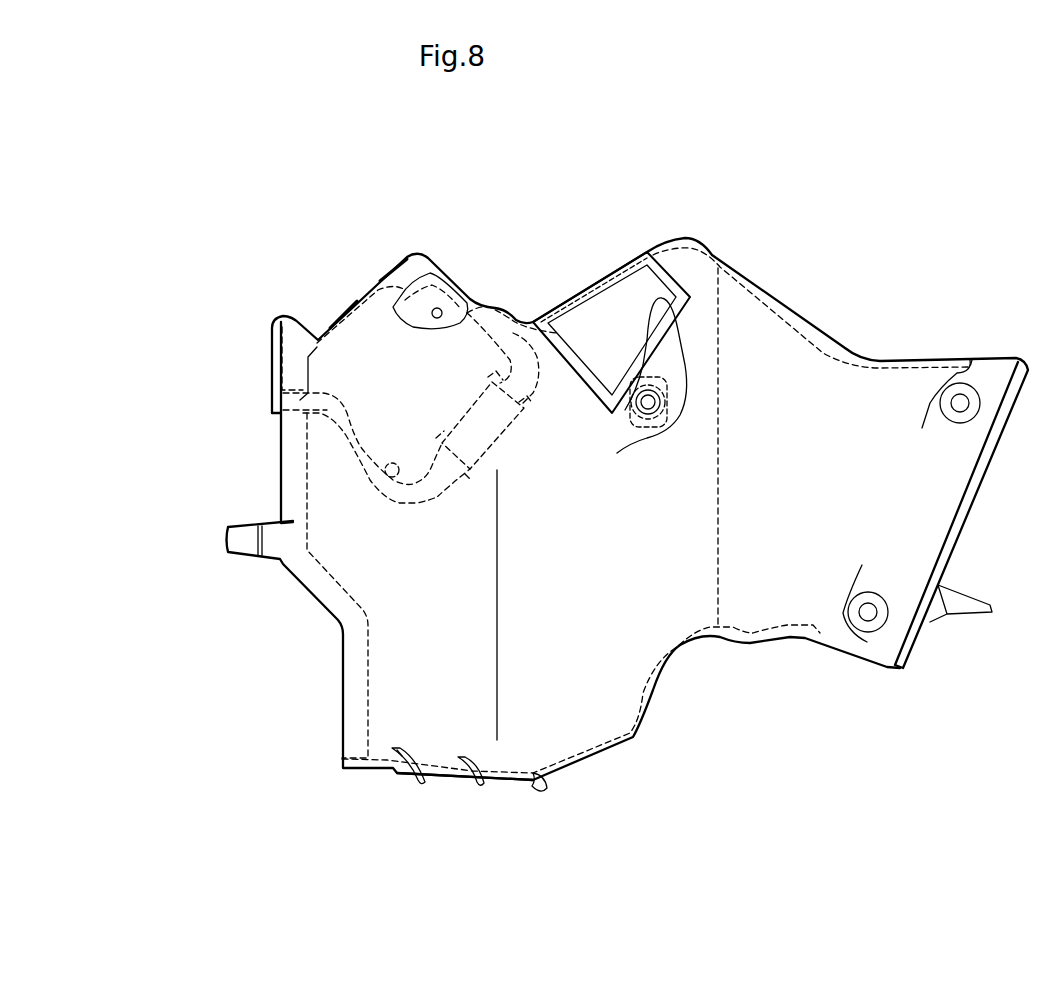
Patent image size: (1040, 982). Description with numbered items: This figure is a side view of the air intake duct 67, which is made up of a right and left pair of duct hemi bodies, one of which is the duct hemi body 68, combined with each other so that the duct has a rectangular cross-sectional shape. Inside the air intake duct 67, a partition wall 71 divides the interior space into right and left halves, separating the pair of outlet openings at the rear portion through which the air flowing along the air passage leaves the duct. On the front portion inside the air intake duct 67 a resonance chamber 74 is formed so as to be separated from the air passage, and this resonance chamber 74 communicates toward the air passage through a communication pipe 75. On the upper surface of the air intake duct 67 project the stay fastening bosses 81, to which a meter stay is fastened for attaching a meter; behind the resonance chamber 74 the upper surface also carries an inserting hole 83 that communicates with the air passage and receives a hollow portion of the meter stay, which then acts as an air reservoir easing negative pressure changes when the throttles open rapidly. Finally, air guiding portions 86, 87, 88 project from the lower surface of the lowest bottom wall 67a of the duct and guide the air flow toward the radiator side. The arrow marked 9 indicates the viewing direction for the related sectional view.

The air intake duct 67 is at (740, 255).
The lowest bottom wall 67a is at (507, 787).
The duct hemi body 68 is at (510, 317).
The partition wall 71 is at (717, 508).
The resonance chamber 74 is at (399, 490).
The communication pipe 75 is at (527, 410).
The stay fastening boss 81 is at (393, 262).
The inserting hole 83 is at (652, 297).
The air guiding portion 86 is at (417, 780).
The air guiding portion 87 is at (474, 782).
The air guiding portion 88 is at (537, 787).
The section line of FIG. 9 is at (190, 520).